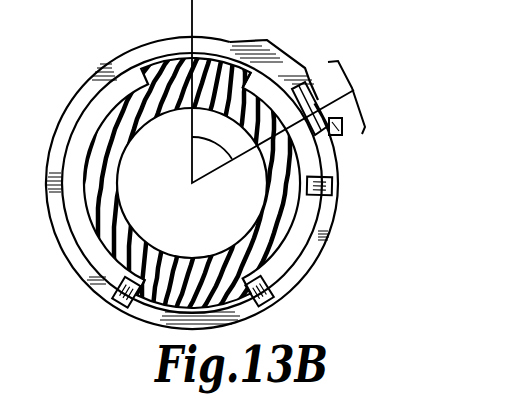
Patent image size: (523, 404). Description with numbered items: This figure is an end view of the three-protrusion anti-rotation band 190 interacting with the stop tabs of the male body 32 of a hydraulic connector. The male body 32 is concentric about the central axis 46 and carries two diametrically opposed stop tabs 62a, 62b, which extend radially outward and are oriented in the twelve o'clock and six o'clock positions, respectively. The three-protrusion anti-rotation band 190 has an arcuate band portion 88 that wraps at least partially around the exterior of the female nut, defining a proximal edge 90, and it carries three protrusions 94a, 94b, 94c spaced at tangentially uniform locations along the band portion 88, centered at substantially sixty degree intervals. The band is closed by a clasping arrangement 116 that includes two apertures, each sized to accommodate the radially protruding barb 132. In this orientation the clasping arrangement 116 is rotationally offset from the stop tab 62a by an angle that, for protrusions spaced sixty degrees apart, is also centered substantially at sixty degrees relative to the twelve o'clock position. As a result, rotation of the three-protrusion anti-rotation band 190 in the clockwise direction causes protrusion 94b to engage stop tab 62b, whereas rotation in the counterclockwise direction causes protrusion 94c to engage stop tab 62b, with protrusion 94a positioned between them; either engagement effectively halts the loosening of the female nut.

The three-protrusion anti-rotation band 190 is at (69, 103).
The band portion 88 is at (338, 217).
The proximal edge 90 is at (118, 68).
The male body 32 is at (106, 247).
The central axis 46 is at (192, 185).
The stop tab 62a is at (236, 56).
The stop tab 62b is at (150, 304).
The protrusion 94a is at (334, 186).
The protrusion 94b is at (272, 297).
The third protrusion 94c is at (118, 297).
The clasping arrangement 116 is at (356, 92).
The radially protruding barb 132 is at (345, 128).